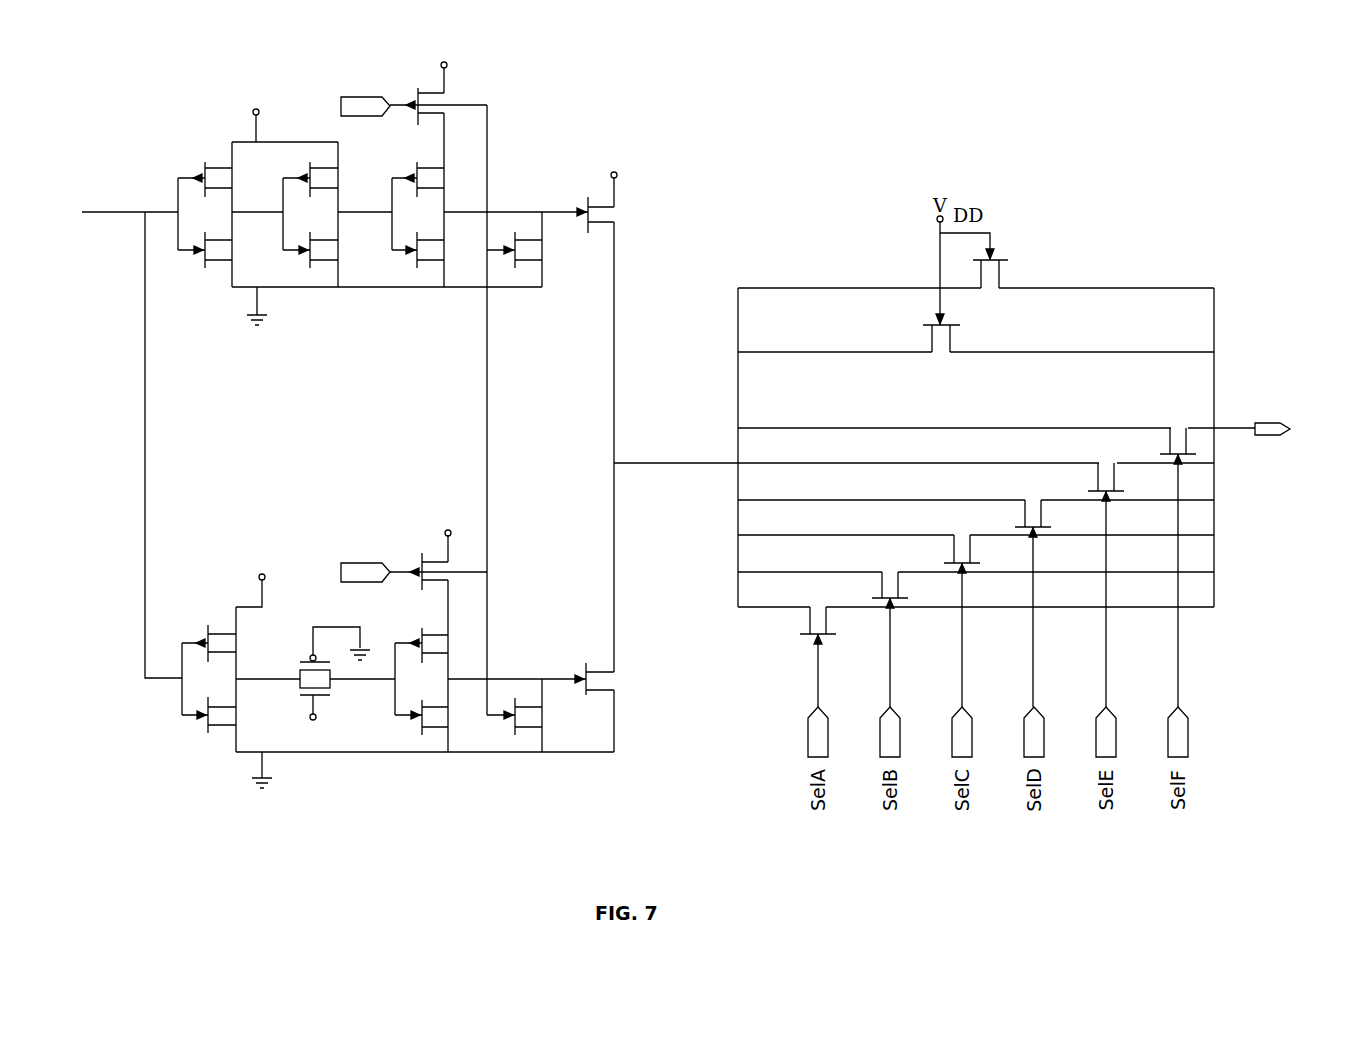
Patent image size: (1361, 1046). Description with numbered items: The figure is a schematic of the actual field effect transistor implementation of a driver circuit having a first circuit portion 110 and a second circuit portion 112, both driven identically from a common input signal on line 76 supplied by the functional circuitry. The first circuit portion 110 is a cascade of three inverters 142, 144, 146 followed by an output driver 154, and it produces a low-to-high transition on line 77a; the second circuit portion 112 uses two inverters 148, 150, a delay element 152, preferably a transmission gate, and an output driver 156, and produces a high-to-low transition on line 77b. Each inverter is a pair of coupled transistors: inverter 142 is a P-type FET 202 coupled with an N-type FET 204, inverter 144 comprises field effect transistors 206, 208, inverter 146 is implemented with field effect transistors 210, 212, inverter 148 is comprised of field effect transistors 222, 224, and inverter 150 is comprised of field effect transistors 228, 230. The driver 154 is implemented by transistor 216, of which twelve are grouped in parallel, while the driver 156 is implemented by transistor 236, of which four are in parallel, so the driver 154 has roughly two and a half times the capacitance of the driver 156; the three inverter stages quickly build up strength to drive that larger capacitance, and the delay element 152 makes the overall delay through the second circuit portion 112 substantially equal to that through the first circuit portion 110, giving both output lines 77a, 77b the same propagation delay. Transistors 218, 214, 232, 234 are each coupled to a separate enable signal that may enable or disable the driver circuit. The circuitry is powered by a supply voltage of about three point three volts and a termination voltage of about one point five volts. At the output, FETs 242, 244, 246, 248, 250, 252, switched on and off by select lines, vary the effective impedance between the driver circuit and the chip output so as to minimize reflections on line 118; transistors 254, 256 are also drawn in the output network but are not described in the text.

The input line 76 is at (133, 210).
The first output line 77a is at (560, 210).
The second output line 77b is at (560, 677).
The first circuit portion 110 is at (546, 88).
The second circuit portion 112 is at (236, 520).
The output line 118 is at (1264, 421).
The first inverter 142 is at (230, 259).
The second inverter 144 is at (337, 259).
The third inverter 146 is at (440, 240).
The inverter 148 is at (241, 727).
The inverter 150 is at (441, 709).
The delay element 152 is at (332, 689).
The output driver 154 is at (600, 186).
The output driver 156 is at (635, 711).
The P-type FET 202 is at (223, 187).
The N-type FET 204 is at (223, 259).
The field effect transistor 206 is at (328, 187).
The field effect transistor 208 is at (328, 259).
The field effect transistor 210 is at (430, 187).
The field effect transistor 212 is at (430, 259).
The enable transistor 214 is at (530, 259).
The field effect transistor 216 is at (600, 222).
The enable transistor 218 is at (421, 93).
The field effect transistor 222 is at (231, 652).
The field effect transistor 224 is at (231, 725).
The field effect transistor 228 is at (440, 633).
The field effect transistor 230 is at (435, 707).
The enable transistor 232 is at (440, 558).
The enable transistor 234 is at (538, 721).
The transistor 236 is at (655, 727).
The output FET 242 is at (810, 615).
The output FET 244 is at (882, 580).
The output FET 246 is at (953, 545).
The output FET 248 is at (1025, 510).
The output FET 250 is at (1098, 472).
The output FET 252 is at (1170, 435).
The pull-up transistor 254 is at (932, 345).
The pull-up transistor 256 is at (999, 280).